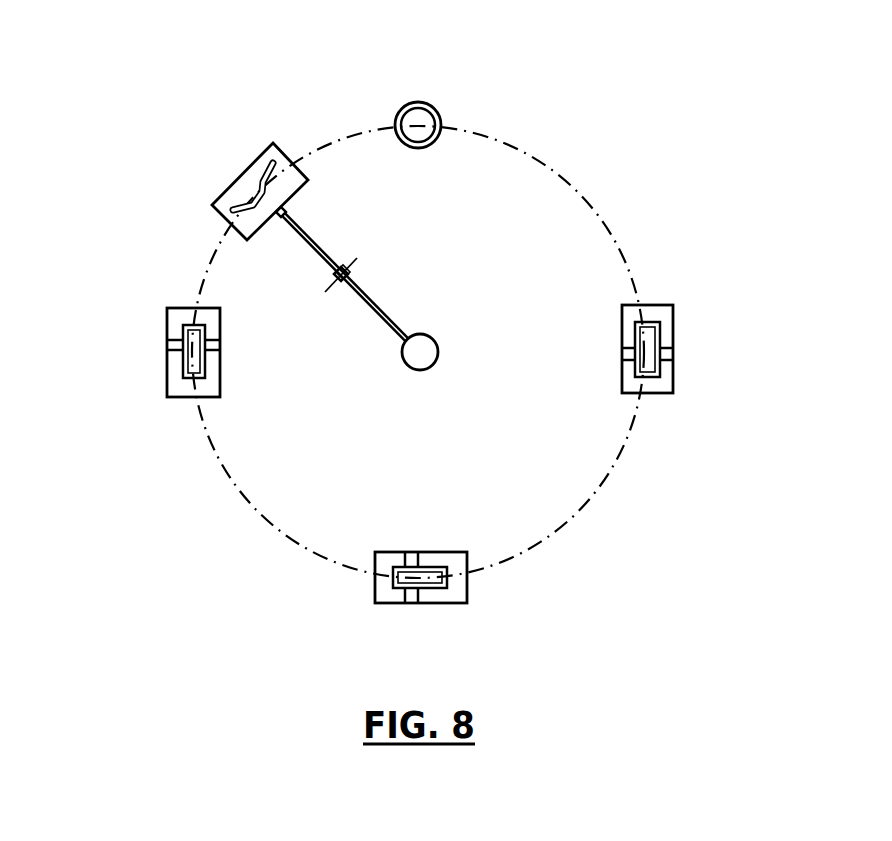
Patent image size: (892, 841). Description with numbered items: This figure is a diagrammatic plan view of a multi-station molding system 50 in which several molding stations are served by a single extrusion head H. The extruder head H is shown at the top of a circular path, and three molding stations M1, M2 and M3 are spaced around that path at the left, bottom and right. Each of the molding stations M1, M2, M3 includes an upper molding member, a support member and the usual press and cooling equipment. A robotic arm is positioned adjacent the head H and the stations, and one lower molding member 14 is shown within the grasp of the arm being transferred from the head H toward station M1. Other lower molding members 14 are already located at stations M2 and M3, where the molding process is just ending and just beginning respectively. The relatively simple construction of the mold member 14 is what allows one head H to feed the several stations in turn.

The multi-station molding system 50 is at (570, 145).
The extrusion head H is at (430, 103).
The lower molding member 14 is at (258, 158).
The molding station M1 is at (167, 366).
The molding station M2 is at (440, 603).
The molding station M3 is at (673, 338).